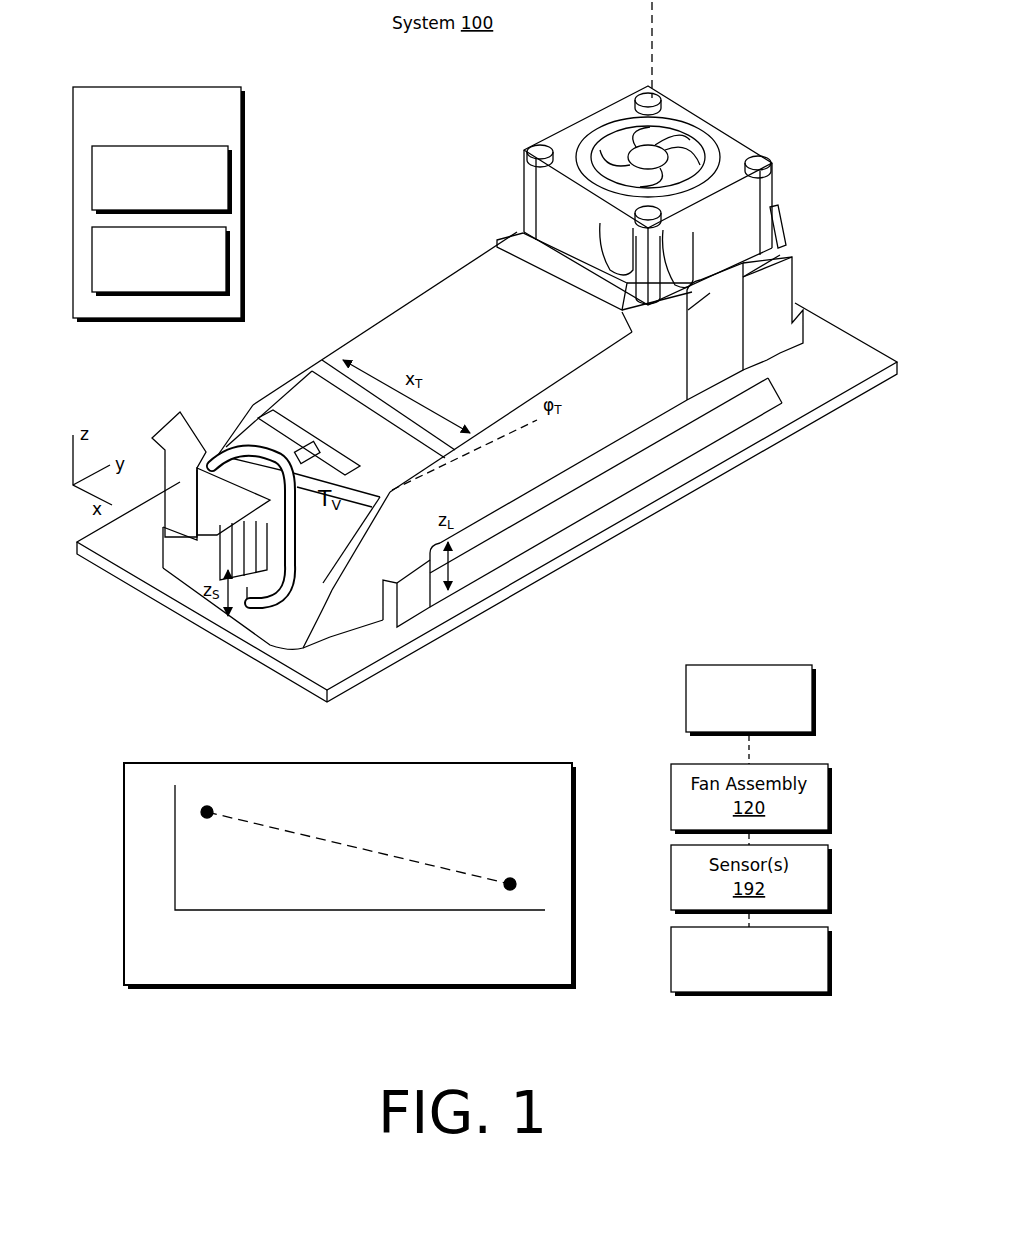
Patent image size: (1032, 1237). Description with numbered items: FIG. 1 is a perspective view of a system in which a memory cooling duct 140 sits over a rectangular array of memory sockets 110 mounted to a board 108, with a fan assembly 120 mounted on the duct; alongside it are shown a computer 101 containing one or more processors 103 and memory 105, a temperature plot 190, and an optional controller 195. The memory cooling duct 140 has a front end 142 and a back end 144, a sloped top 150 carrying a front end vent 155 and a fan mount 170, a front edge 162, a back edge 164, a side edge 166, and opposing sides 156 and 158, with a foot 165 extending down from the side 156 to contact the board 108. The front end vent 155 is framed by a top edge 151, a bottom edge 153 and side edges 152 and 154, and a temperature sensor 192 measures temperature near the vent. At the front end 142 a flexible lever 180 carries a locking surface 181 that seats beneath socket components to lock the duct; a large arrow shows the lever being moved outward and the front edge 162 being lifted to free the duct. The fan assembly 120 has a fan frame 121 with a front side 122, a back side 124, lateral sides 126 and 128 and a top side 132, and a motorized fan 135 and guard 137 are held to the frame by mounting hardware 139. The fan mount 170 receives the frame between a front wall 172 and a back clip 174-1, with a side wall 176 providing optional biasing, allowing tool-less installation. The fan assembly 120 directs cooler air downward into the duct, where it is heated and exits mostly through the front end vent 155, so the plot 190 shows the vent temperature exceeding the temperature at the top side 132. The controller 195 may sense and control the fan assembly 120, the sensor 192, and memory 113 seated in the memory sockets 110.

The computer 101 is at (159, 204).
The processor 103 is at (162, 180).
The memory 105 is at (161, 261).
The board 108 is at (487, 502).
The memory sockets 110 is at (606, 492).
The memory 113 is at (751, 961).
The fan assembly 120 is at (623, 153).
The fan frame 121 is at (572, 222).
The front side 122 is at (497, 210).
The back side 124 is at (758, 142).
The lateral side 126 is at (665, 263).
The lateral side 128 is at (497, 153).
The top side 132 is at (712, 105).
The motorized fan 135 is at (562, 133).
The guard 137 is at (610, 102).
The mounting hardware 139 is at (619, 143).
The memory cooling duct 140 is at (385, 318).
The front end 142 is at (204, 651).
The back end 144 is at (751, 294).
The top 150 is at (472, 402).
The top edge 151 is at (378, 456).
The side edge 152 is at (290, 561).
The bottom edge 153 is at (283, 610).
The side edge 154 is at (265, 421).
The front end vent 155 is at (274, 446).
The side 156 is at (563, 471).
The side 158 is at (336, 336).
The front edge 162 is at (153, 549).
The back edge 164 is at (837, 355).
The foot 165 is at (413, 596).
The side edge 166 is at (599, 475).
The fan mount 170 is at (585, 280).
The front wall 172 is at (546, 281).
The back clip 174-1 is at (820, 218).
The side wall 176 is at (686, 331).
The lever 180 is at (212, 466).
The locking surface 181 is at (242, 560).
The temperature plot 190 is at (350, 876).
The temperature sensor 192 is at (333, 442).
The controller 195 is at (751, 700).